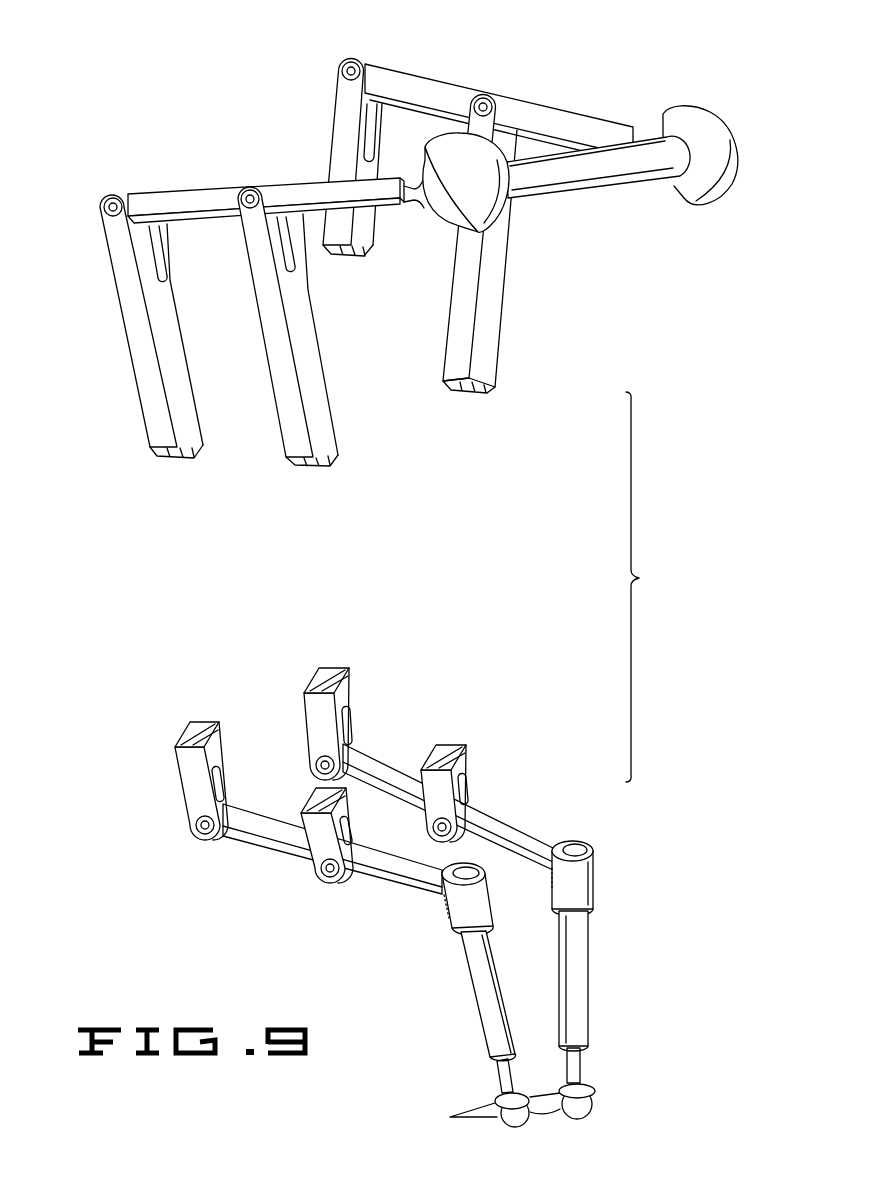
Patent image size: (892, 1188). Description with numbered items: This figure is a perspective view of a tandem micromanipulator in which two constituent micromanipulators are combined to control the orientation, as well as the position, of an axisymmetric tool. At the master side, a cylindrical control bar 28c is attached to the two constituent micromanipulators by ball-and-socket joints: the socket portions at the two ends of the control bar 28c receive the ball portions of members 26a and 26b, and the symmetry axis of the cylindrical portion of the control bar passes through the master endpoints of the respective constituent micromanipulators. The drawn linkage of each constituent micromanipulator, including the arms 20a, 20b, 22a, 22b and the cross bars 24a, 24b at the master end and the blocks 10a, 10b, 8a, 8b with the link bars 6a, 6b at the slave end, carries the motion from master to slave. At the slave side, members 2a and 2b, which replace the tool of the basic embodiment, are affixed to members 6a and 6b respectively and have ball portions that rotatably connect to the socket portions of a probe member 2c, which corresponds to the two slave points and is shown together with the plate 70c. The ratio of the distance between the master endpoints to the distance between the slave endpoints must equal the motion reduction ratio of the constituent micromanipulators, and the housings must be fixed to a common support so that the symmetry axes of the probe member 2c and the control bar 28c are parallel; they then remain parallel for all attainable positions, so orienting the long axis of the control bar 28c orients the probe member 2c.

The first upper arm 20a is at (192, 407).
The second upper arm 20b is at (337, 102).
The third upper arm 22a is at (323, 397).
The fourth upper arm 22b is at (497, 313).
The upper cross bar 24a is at (183, 192).
The upper cross bar 24b is at (569, 114).
The member with ball portion 26a is at (445, 222).
The member with ball portion 26b is at (668, 188).
The cylindrical control bar 28c is at (557, 198).
The pivot block 10a is at (177, 735).
The pivot block 10b is at (350, 675).
The pivot block 8a is at (312, 797).
The pivot block 8b is at (460, 752).
The member 6a is at (260, 848).
The member 6b is at (513, 829).
The member 2a is at (472, 983).
The member 2b is at (589, 985).
The probe member 2c is at (559, 1110).
The base plate 70c is at (452, 1116).